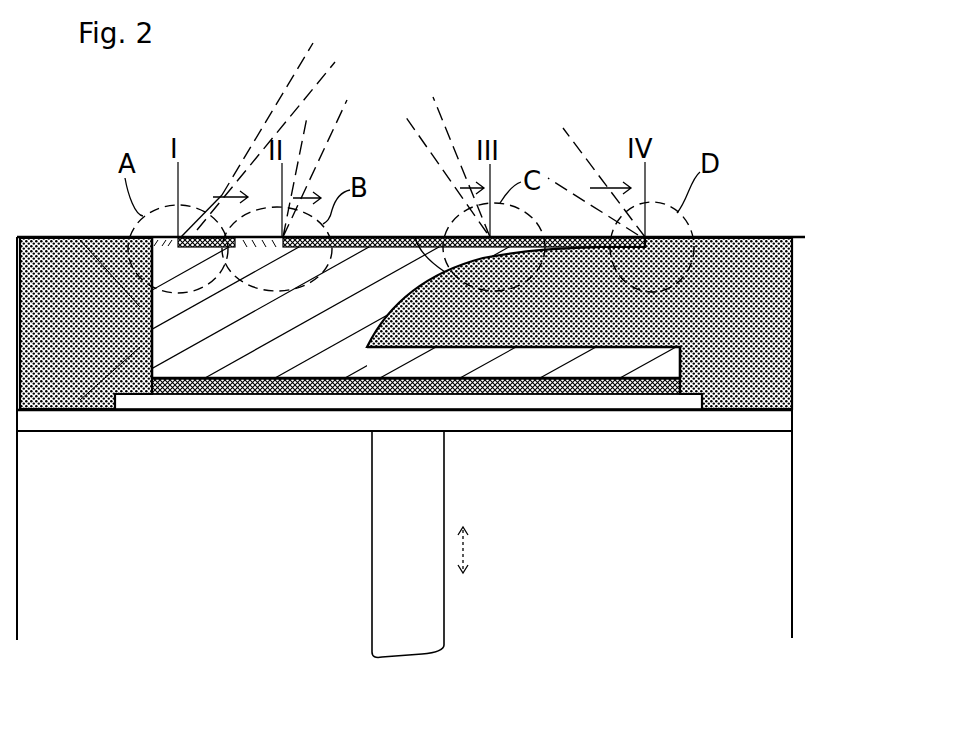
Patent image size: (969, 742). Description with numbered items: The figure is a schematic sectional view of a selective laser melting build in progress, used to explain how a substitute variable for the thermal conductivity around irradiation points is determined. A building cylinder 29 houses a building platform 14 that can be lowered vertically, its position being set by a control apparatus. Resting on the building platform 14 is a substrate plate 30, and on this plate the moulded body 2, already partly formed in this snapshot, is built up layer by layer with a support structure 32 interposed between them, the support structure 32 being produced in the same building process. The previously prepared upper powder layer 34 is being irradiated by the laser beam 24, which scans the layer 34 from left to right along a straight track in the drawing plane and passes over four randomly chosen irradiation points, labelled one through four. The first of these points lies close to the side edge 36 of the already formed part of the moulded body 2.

The moulded body 2 is at (60, 411).
The building platform 14 is at (586, 431).
The laser beam 24 is at (306, 54).
The building cylinder 29 is at (790, 356).
The substrate plate 30 is at (318, 395).
The support structure 32 is at (240, 382).
The upper powder layer 34 is at (415, 237).
The side edge 36 is at (80, 237).